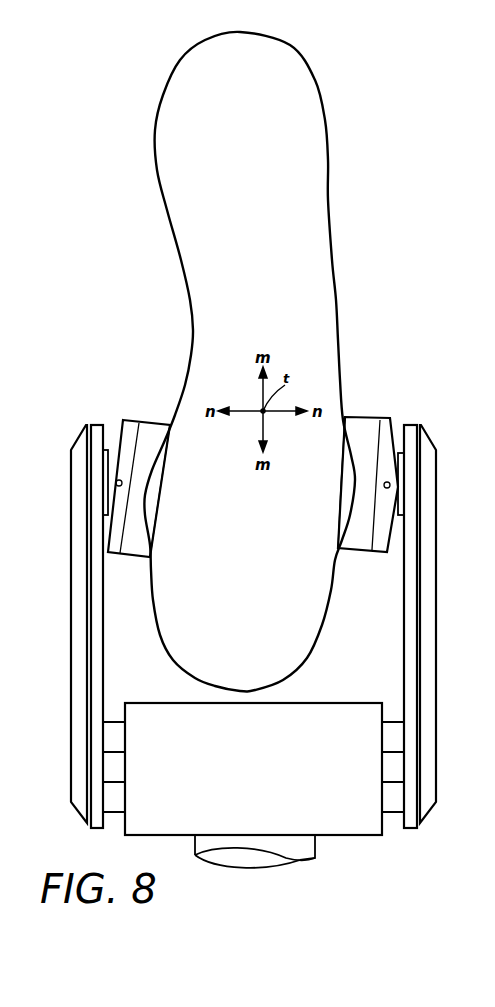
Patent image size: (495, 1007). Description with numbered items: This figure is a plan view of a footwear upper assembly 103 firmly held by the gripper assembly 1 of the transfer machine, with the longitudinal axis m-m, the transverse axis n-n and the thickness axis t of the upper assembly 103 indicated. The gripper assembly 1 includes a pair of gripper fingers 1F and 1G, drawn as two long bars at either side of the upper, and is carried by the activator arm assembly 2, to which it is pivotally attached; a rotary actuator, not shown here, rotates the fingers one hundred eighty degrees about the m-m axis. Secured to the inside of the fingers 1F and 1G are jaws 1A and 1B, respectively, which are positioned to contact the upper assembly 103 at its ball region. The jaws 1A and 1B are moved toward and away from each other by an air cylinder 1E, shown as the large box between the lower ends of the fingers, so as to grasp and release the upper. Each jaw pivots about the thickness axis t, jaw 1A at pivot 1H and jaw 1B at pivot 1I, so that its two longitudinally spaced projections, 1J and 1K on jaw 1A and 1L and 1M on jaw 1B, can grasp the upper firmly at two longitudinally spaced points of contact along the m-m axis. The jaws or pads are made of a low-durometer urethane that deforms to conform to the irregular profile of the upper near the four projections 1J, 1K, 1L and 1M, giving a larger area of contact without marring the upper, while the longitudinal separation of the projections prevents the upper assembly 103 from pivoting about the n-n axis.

The upper assembly 103 is at (249, 362).
The gripper assembly 1 is at (252, 626).
The gripper jaw 1A is at (368, 418).
The gripper jaw 1B is at (148, 425).
The air cylinder 1E is at (263, 780).
The gripper finger 1F is at (428, 602).
The gripper finger 1G is at (93, 573).
The pivot 1H is at (391, 486).
The pivot 1I is at (115, 484).
The projection 1J is at (352, 423).
The projection 1K is at (345, 535).
The projection 1L is at (160, 443).
The projection 1M is at (140, 540).
The activator arm assembly 2 is at (303, 855).